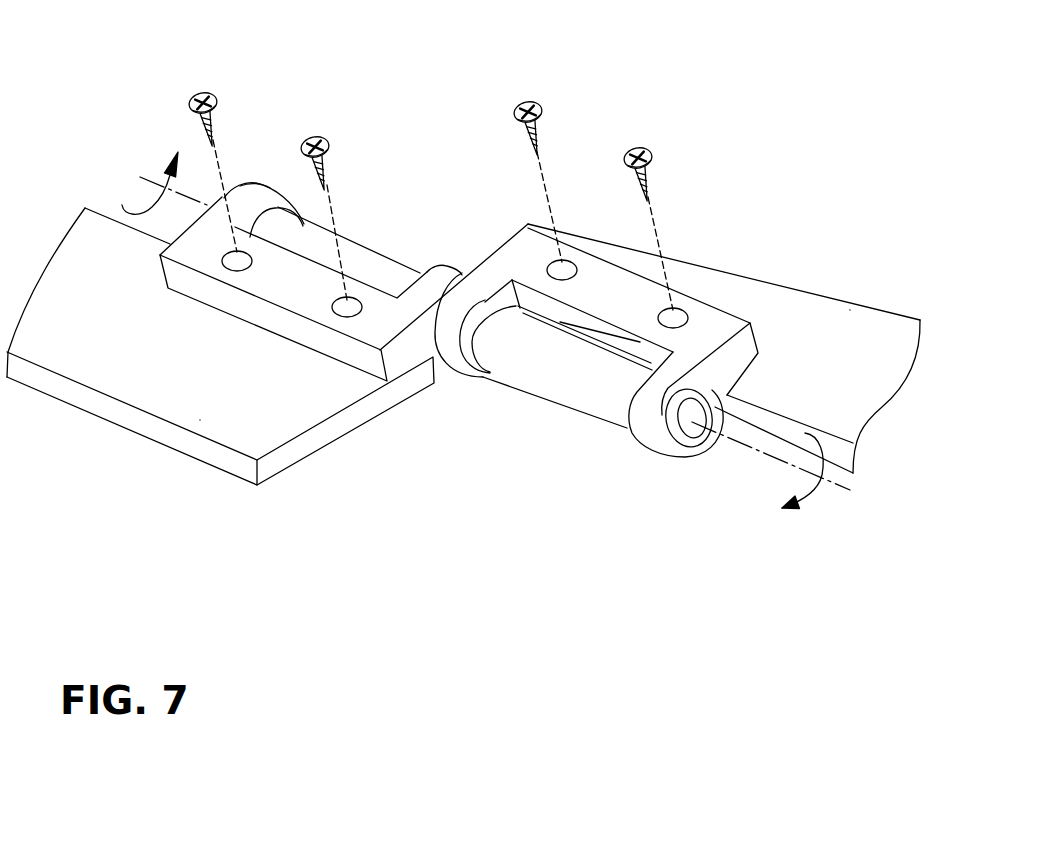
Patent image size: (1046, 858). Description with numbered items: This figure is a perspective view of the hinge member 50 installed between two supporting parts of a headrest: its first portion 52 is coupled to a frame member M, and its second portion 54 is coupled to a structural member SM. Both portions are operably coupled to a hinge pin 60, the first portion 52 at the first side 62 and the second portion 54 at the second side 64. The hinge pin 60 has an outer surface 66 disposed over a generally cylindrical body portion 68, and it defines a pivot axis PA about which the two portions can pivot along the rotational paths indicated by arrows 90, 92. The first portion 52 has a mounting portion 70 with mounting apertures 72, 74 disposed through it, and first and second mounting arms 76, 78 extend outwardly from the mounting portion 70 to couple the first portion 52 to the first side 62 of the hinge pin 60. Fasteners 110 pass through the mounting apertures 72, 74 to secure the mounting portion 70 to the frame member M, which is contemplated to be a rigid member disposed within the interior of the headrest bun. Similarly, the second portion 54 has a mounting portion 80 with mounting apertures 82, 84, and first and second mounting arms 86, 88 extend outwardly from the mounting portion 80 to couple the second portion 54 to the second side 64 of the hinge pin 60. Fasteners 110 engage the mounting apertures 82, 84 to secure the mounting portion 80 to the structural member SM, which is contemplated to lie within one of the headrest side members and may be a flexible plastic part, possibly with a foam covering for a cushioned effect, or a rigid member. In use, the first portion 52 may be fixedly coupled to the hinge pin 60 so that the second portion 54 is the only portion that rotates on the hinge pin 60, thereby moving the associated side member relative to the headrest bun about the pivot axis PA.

The hinge member 50 is at (353, 205).
The first portion 52 is at (133, 323).
The second portion 54 is at (673, 255).
The hinge pin 60 is at (352, 248).
The first side 62 is at (402, 272).
The second side 64 is at (548, 401).
The outer surface 66 is at (453, 347).
The cylindrical body portion 68 is at (618, 397).
The mounting portion 70 is at (293, 288).
The mounting aperture 72 is at (233, 278).
The mounting aperture 74 is at (345, 320).
The first mounting arm 76 is at (262, 194).
The second mounting arm 78 is at (460, 273).
The mounting portion 80 is at (633, 292).
The mounting aperture 82 is at (573, 260).
The mounting aperture 84 is at (680, 307).
The first mounting arm 86 is at (433, 357).
The second mounting arm 88 is at (647, 433).
The arrow 90 is at (168, 188).
The arrow 92 is at (812, 493).
The fasteners 110 is at (202, 90).
The frame member M is at (193, 418).
The structural member SM is at (832, 317).
The pivot axis PA is at (772, 458).